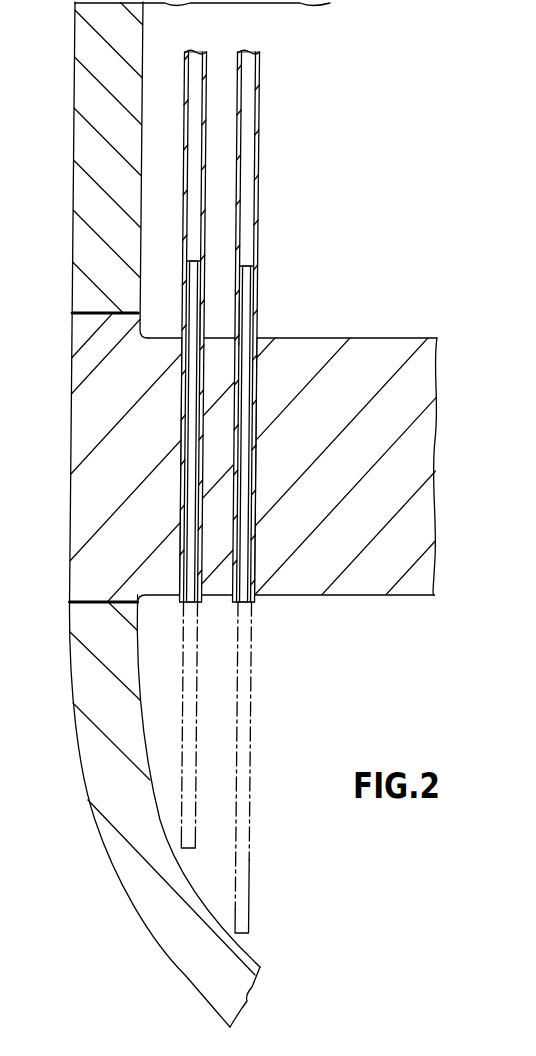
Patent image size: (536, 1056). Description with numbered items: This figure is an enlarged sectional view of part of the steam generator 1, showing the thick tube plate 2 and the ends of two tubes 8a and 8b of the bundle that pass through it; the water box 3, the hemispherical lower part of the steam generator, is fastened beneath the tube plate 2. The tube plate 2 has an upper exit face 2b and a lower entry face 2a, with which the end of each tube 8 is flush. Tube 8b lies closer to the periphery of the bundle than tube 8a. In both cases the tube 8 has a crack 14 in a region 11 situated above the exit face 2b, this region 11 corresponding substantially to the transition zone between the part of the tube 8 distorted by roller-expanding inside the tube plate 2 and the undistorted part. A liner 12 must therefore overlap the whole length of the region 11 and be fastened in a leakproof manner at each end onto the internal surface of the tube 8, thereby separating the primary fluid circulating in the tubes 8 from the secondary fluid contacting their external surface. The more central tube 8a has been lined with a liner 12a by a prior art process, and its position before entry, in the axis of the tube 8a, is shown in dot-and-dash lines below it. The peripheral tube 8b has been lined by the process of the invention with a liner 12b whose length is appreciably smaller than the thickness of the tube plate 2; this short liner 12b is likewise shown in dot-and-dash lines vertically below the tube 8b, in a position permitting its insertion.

The steam generator 1 is at (70, 258).
The tube plate 2 is at (420, 404).
The entry face of the tube plate 2a is at (388, 597).
The exit face of the tube plate 2b is at (334, 338).
The water box 3 is at (85, 742).
The tubes 8 is at (262, 150).
The tube 8a is at (260, 84).
The tube 8b is at (207, 72).
The region 11 is at (177, 327).
The liner 12 is at (260, 442).
The liner 12a is at (259, 285).
The liner 12b is at (203, 282).
The crack 14 is at (199, 326).